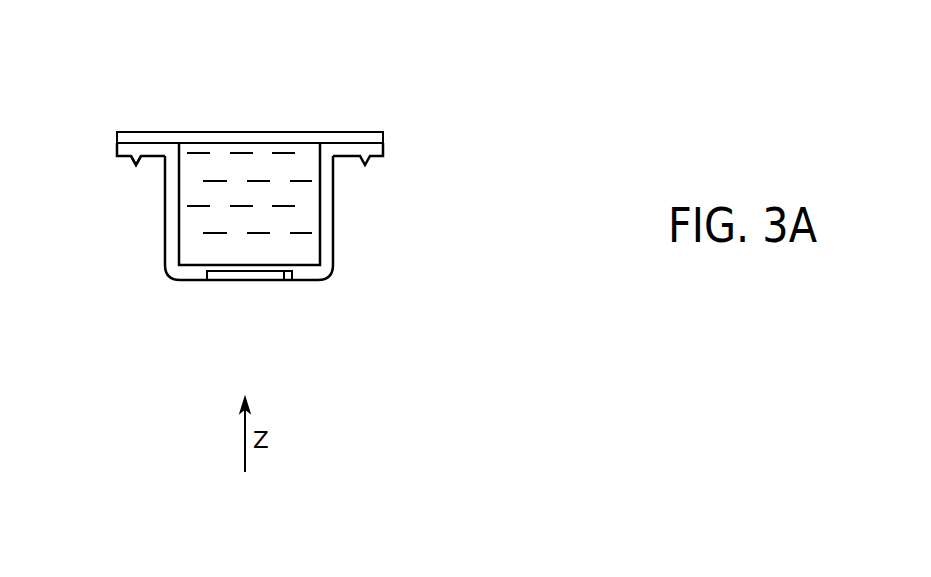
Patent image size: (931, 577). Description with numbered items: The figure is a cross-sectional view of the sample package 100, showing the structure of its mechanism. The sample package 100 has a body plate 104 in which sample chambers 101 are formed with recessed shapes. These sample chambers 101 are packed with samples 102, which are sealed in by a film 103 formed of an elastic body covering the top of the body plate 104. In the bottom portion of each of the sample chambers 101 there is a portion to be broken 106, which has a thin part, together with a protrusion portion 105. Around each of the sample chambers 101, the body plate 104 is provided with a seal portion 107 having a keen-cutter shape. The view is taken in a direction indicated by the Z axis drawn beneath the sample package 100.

The sample package 100 is at (303, 57).
The sample chambers 101 is at (328, 233).
The samples 102 is at (220, 165).
The film 103 is at (343, 143).
The body plate 104 is at (378, 149).
The protrusion portion 105 is at (272, 281).
The portion to be broken 106 is at (288, 278).
The seal portion 107 is at (132, 167).